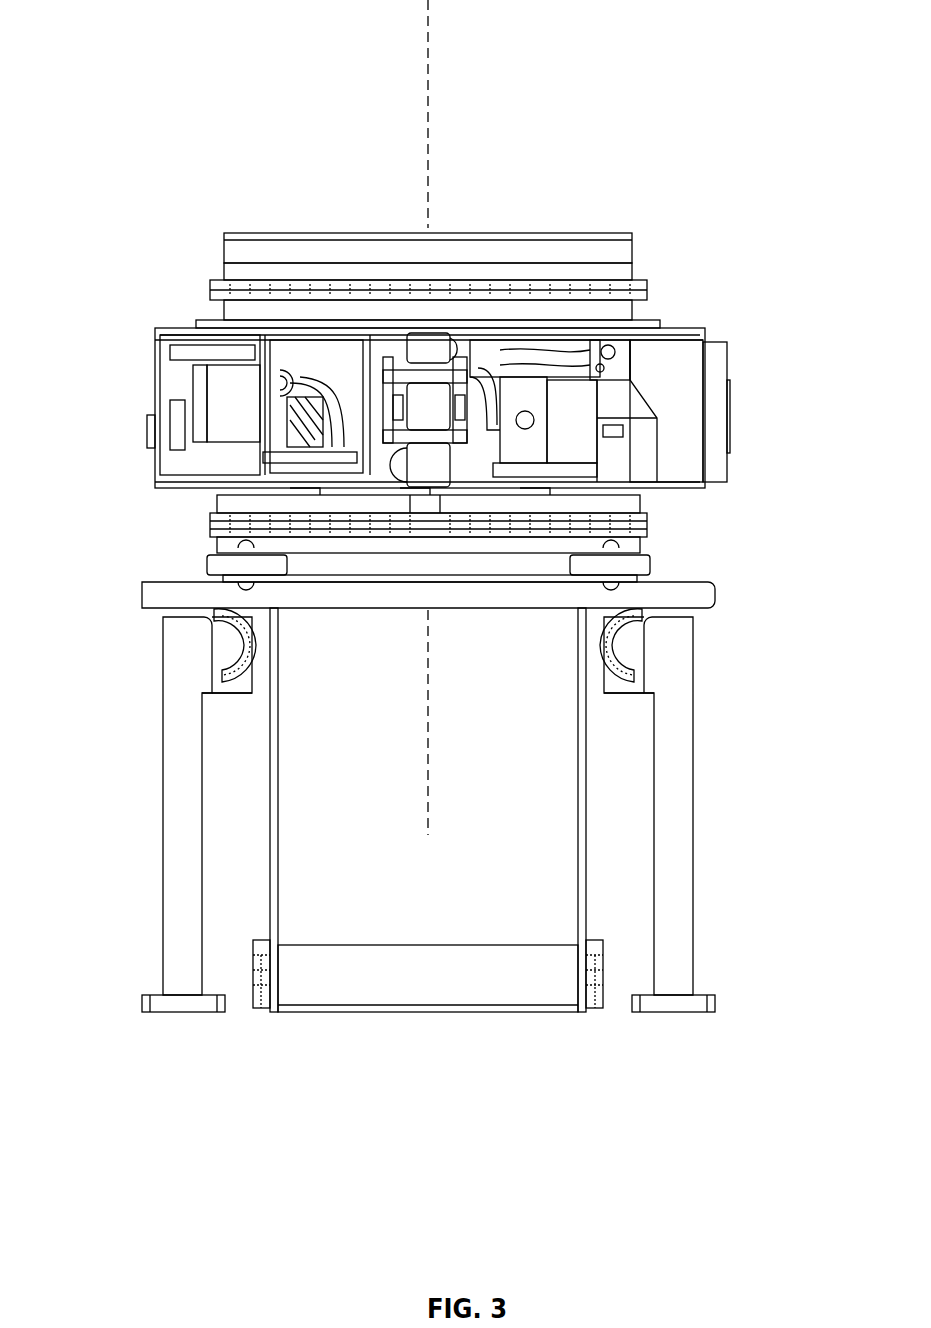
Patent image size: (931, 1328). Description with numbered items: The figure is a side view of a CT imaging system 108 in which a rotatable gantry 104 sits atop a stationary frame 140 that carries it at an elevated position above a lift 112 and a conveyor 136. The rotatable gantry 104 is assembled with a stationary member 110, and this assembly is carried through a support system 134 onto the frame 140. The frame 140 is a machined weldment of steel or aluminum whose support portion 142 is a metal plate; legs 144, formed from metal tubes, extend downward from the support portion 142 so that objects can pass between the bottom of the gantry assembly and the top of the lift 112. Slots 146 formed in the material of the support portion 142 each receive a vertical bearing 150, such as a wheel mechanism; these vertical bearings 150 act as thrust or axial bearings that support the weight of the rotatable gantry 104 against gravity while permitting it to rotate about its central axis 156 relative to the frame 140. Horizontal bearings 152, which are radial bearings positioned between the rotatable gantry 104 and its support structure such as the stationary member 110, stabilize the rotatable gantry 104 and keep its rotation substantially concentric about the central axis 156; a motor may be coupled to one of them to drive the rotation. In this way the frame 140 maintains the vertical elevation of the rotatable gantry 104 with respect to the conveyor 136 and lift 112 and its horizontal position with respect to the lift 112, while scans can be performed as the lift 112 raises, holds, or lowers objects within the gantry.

The rotatable gantry 104 is at (633, 265).
The CT imaging system 108 is at (262, 140).
The stationary member 110 is at (172, 305).
The lift 112 is at (440, 992).
The support system 134 is at (168, 548).
The conveyor 136 is at (469, 841).
The frame 140 is at (675, 1015).
The support portion 142 is at (704, 602).
The legs 144 is at (683, 760).
The slots 146 is at (232, 686).
The vertical bearings 150 is at (248, 643).
The horizontal bearings 152 is at (655, 562).
The central axis 156 is at (430, 62).